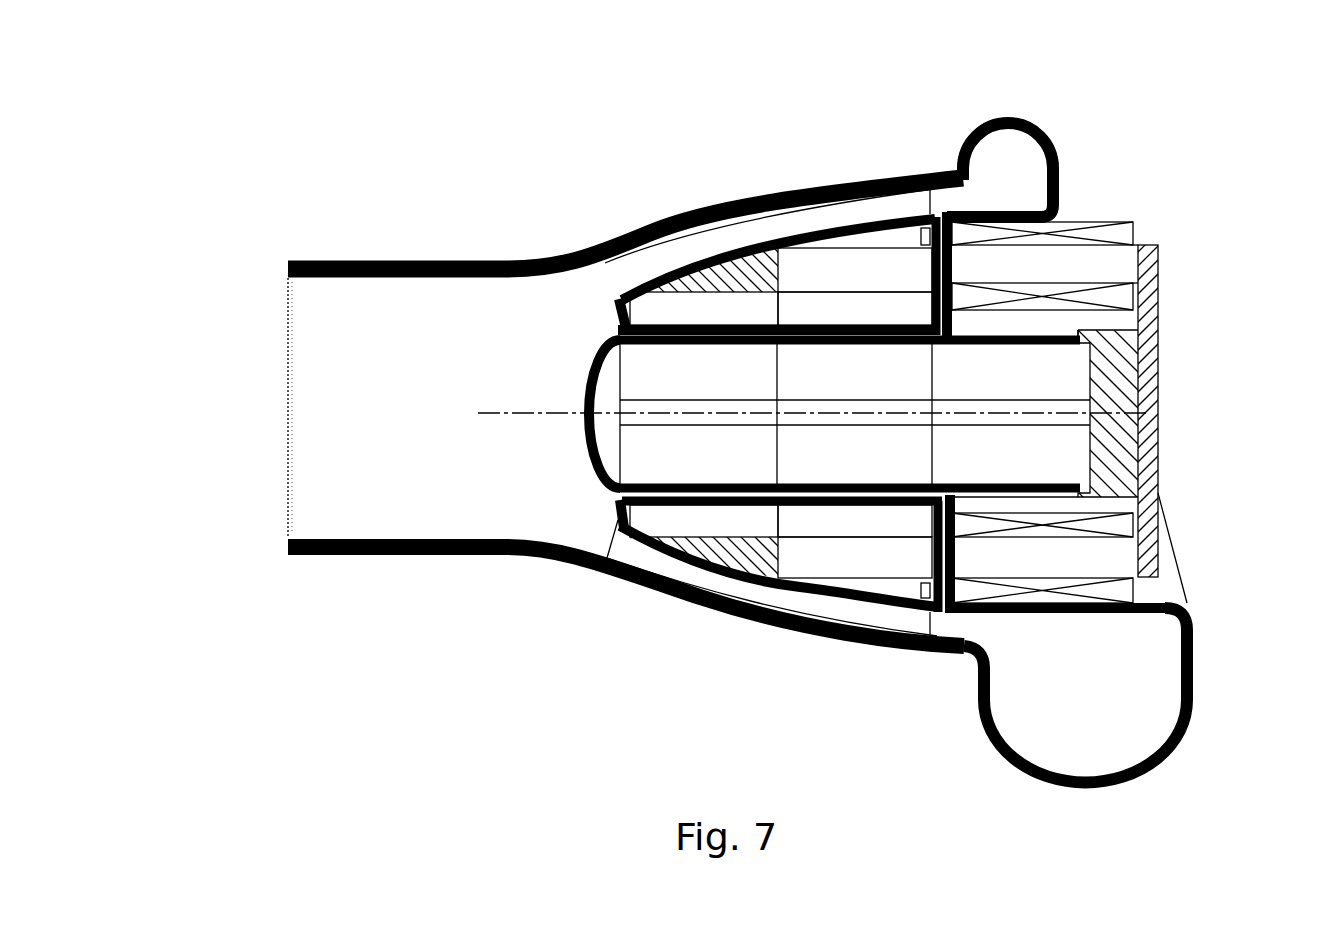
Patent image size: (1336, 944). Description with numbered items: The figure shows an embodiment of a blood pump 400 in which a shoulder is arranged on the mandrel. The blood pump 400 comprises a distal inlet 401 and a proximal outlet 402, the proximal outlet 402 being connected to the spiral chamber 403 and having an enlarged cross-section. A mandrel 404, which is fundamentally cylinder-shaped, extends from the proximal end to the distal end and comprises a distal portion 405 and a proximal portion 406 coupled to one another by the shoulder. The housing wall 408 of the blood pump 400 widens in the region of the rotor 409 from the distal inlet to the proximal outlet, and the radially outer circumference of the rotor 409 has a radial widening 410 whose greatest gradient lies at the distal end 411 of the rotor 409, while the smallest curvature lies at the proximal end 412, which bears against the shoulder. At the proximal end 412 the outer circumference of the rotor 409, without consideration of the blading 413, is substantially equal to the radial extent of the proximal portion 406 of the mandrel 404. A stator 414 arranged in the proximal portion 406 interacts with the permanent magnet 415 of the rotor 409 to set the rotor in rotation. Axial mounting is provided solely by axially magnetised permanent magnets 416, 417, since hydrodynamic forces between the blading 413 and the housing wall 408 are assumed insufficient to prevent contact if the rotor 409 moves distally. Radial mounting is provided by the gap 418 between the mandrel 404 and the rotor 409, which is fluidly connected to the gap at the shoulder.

The blood pump 400 is at (268, 336).
The distal inlet 401 is at (383, 462).
The proximal outlet 402 is at (1127, 685).
The spiral chamber 403 is at (1008, 163).
The mandrel 404 is at (1177, 327).
The distal portion 405 is at (588, 373).
The proximal portion 406 is at (964, 213).
The housing wall 408 is at (577, 257).
The rotor 409 is at (603, 515).
The radial widening 410 is at (757, 240).
The distal end 411 is at (615, 316).
The proximal end 412 is at (937, 598).
The blading 413 is at (763, 597).
The stator 414 is at (1097, 257).
The permanent magnet 415 is at (838, 312).
The axially magnetised permanent magnet 416 is at (697, 315).
The axially magnetised permanent magnet 417 is at (1080, 386).
The gap 418 is at (617, 493).